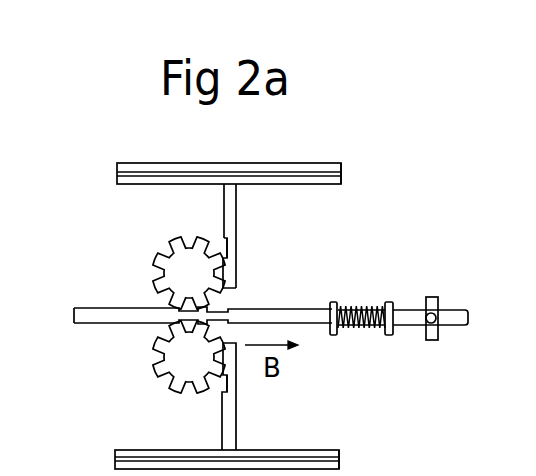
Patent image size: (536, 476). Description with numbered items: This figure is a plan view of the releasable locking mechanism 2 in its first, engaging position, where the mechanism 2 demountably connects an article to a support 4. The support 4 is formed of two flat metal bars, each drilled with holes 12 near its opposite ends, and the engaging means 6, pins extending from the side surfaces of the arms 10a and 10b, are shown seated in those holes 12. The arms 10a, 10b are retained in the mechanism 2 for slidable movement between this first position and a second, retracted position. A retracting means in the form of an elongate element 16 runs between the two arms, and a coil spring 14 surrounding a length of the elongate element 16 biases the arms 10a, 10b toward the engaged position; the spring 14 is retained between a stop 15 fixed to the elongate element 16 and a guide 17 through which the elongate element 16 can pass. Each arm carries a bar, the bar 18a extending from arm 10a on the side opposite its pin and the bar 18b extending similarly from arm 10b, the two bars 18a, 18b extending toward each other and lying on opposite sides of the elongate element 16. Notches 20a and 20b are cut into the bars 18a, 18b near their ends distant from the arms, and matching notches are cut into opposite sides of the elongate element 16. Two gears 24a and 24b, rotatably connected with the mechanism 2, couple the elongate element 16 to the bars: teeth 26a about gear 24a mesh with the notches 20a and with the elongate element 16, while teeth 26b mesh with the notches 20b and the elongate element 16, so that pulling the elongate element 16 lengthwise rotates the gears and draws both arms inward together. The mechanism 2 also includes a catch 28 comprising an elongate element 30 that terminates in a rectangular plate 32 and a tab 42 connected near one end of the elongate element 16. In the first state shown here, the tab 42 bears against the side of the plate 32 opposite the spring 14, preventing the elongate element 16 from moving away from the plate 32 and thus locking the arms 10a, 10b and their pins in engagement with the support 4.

The releasable locking mechanism 2 is at (392, 210).
The support 4 is at (342, 163).
The engaging means 6 is at (248, 193).
The arm 10a is at (137, 184).
The arm 10b is at (339, 450).
The holes 12 is at (140, 162).
The coil spring 14 is at (358, 328).
The stop 15 is at (390, 335).
The elongate element 16 is at (93, 323).
The guide 17 is at (333, 302).
The bar 18a is at (237, 247).
The bar 18b is at (235, 428).
The notches 20a is at (226, 250).
The notches 20b is at (225, 382).
The gear 24a is at (168, 270).
The gear 24b is at (157, 373).
The teeth 26a is at (181, 246).
The teeth 26b is at (168, 393).
The catch 28 is at (446, 297).
The elongate element 30 is at (427, 305).
The rectangular plate 32 is at (437, 342).
The tab 42 is at (463, 330).